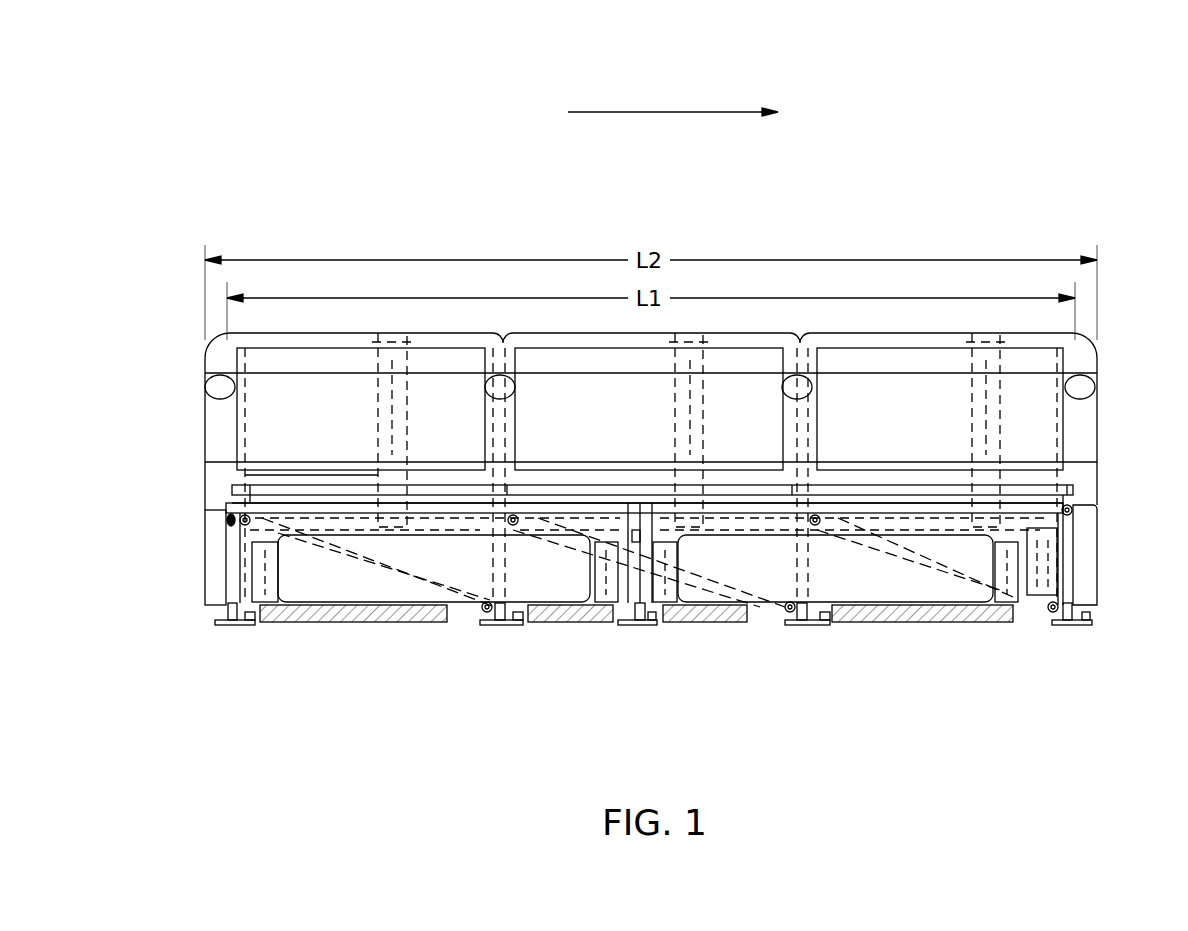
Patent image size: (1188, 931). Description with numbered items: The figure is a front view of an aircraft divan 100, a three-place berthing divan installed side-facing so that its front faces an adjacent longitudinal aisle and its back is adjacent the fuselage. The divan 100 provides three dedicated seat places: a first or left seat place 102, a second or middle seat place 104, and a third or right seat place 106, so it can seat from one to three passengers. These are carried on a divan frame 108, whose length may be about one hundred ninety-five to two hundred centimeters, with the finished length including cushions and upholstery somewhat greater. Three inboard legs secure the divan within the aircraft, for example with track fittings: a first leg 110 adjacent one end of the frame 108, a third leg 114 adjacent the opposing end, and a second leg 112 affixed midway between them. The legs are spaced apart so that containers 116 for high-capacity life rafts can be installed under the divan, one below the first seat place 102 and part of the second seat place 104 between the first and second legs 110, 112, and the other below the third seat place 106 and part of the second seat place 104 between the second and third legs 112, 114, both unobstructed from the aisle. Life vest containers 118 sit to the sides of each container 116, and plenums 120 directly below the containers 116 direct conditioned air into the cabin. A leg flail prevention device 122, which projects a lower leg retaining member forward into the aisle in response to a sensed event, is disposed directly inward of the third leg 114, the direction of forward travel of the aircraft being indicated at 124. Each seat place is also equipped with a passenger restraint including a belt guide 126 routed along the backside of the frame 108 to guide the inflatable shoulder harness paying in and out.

The aircraft divan 100 is at (1086, 168).
The first seat place 102 is at (328, 246).
The second seat place 104 is at (733, 246).
The third seat place 106 is at (943, 246).
The divan frame 108 is at (1083, 474).
The first leg 110 is at (232, 565).
The second leg 112 is at (640, 598).
The third leg 114 is at (1067, 577).
The container 116 is at (348, 585).
The life vest container 118 is at (272, 590).
The plenum 120 is at (418, 612).
The leg flail prevention device 122 is at (1033, 588).
The direction of forward travel 124 is at (672, 112).
The belt guide 126 is at (408, 393).